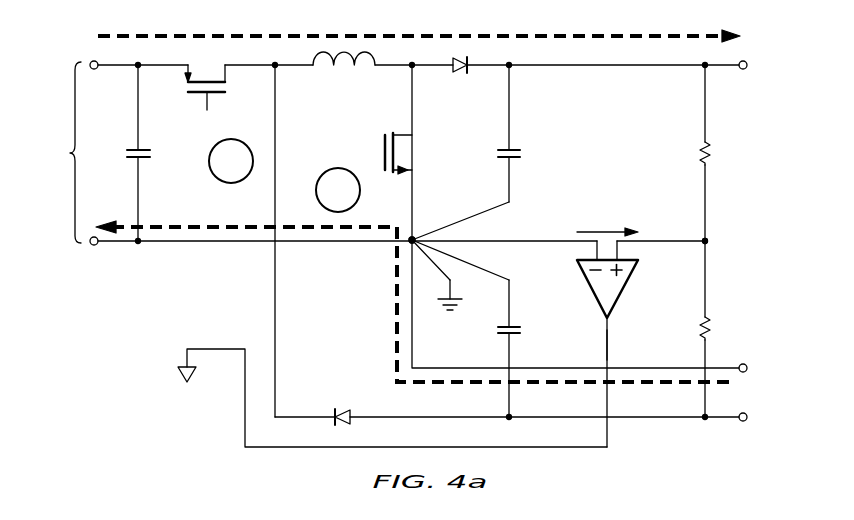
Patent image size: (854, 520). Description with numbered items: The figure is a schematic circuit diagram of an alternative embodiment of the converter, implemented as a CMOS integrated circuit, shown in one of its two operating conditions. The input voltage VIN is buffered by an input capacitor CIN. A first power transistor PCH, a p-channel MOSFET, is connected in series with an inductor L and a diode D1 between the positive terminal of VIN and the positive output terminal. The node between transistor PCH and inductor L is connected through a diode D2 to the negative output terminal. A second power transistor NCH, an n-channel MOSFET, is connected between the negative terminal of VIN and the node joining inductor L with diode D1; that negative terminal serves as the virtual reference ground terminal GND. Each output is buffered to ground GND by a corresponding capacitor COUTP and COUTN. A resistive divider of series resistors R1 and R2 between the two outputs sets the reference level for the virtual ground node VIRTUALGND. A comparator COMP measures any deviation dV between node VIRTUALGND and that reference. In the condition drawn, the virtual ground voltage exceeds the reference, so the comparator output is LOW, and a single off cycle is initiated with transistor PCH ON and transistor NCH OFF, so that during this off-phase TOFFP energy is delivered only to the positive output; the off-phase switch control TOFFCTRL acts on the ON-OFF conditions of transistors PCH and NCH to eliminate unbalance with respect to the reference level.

The TOFFP phase current path TOFFP is at (418, 196).
The input voltage VIN is at (66, 153).
The input capacitor CIN is at (153, 153).
The first power transistor PCH is at (205, 101).
The ON condition ON is at (231, 161).
The inductor L is at (344, 68).
The diode D1 is at (460, 76).
The second power transistor NCH is at (385, 153).
The OFF condition OFF is at (338, 190).
The virtual reference node VIRTUALGND is at (414, 238).
The capacitor COUTP is at (497, 152).
The capacitor COUTN is at (497, 328).
The virtual reference ground terminal GND is at (601, 309).
The comparator COMP is at (630, 344).
The comparator output LOW is at (628, 345).
The deviation ΔV dV is at (607, 222).
The resistor R1 is at (716, 153).
The resistor R2 is at (716, 329).
The diode D2 is at (342, 405).
The TOFF-phase switch control TOFFCTRL is at (370, 361).